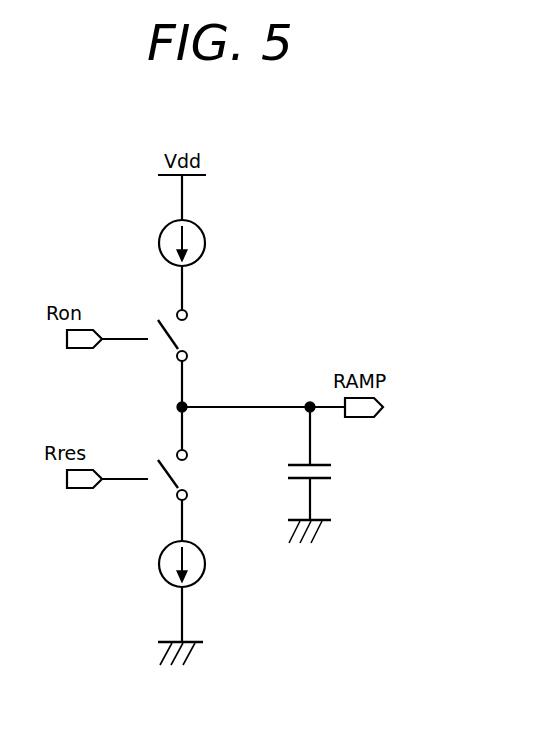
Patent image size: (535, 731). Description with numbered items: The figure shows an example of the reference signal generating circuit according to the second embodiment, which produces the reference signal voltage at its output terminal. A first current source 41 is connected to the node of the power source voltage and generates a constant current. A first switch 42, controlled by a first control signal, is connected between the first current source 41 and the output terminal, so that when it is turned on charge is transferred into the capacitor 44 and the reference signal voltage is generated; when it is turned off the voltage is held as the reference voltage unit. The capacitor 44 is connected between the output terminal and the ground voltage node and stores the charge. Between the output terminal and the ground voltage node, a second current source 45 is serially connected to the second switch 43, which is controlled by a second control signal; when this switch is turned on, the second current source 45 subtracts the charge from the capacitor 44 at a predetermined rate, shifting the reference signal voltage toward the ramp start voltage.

The first current source 41 is at (159, 243).
The first switch 42 is at (183, 335).
The second switch 43 is at (183, 474).
The capacitor 44 is at (334, 472).
The second current source 45 is at (159, 563).